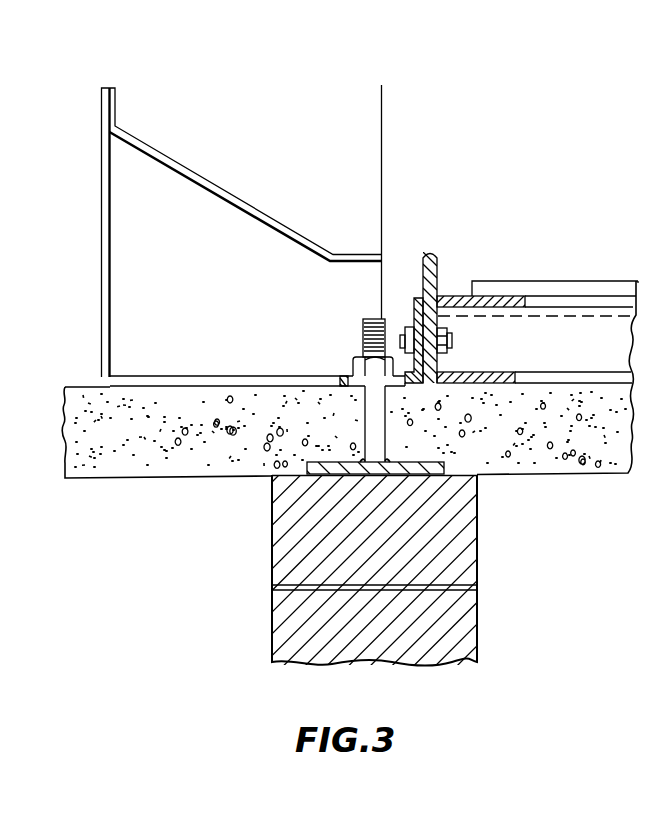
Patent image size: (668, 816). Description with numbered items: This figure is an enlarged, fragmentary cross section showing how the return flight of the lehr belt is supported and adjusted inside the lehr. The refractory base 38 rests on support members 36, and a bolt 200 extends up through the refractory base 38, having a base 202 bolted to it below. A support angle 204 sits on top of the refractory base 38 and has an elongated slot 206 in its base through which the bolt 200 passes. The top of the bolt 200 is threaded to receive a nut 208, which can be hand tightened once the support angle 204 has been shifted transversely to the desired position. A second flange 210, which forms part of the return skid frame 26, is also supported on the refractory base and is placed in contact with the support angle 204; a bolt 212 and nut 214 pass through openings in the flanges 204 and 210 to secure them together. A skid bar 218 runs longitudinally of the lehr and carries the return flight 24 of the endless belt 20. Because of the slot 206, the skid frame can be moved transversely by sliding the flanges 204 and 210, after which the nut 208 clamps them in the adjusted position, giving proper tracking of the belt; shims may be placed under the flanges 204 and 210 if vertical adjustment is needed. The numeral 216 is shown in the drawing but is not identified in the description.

The endless belt 20 is at (589, 277).
The return flight 24 is at (547, 286).
The return skid frame 26 is at (459, 277).
The support members 36 is at (458, 540).
The refractory base 38 is at (562, 462).
The bolt 200 is at (386, 426).
The base 202 is at (272, 503).
The support angle 204 is at (415, 300).
The elongated slot 206 is at (348, 375).
The nut 208 is at (360, 333).
The second flange 210 is at (438, 256).
The bolt 212 is at (452, 340).
The nut 214 is at (405, 330).
The bottom flange 216 is at (490, 372).
The skid bar 218 is at (518, 303).